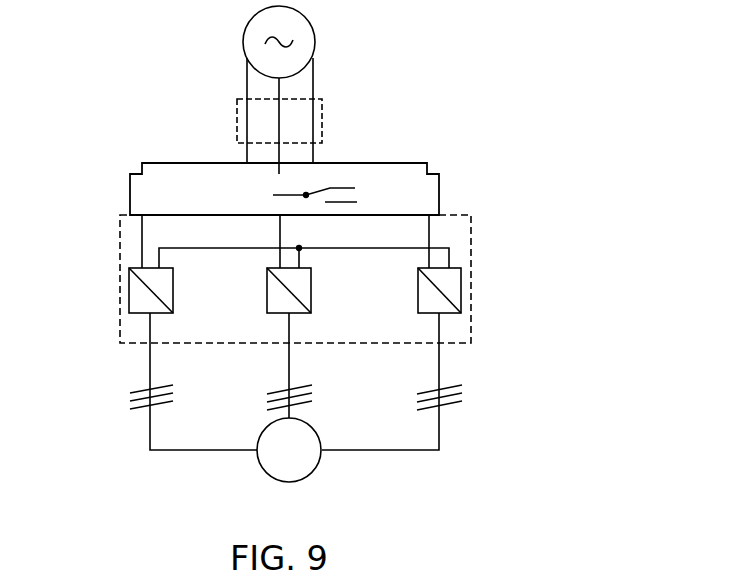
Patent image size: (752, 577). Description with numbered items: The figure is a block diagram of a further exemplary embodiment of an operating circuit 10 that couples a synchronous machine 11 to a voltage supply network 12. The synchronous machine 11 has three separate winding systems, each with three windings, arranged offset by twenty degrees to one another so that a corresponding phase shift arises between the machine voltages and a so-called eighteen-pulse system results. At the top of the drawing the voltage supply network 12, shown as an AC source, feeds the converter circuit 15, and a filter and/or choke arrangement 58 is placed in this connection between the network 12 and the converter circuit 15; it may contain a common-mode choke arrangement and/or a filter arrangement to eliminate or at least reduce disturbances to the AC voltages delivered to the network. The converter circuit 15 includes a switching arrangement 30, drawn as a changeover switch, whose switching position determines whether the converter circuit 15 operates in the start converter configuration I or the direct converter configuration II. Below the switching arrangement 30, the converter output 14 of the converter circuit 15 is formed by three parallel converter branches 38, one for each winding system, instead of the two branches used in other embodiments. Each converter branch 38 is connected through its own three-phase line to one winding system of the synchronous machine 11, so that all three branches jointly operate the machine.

The operating circuit 10 is at (567, 95).
The synchronous machine 11 is at (292, 477).
The voltage supply network 12 is at (316, 40).
The converter output 14 is at (139, 354).
The converter circuit 15 is at (532, 263).
The switching arrangement 30 is at (440, 190).
The converter branch 38 is at (175, 286).
The filter and/or choke arrangement 58 is at (323, 118).
The start converter configuration I is at (344, 183).
The direct converter configuration II is at (348, 207).